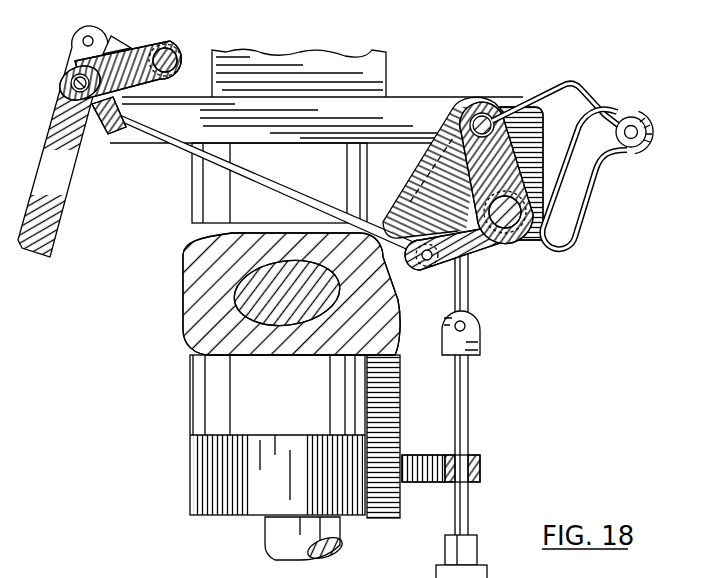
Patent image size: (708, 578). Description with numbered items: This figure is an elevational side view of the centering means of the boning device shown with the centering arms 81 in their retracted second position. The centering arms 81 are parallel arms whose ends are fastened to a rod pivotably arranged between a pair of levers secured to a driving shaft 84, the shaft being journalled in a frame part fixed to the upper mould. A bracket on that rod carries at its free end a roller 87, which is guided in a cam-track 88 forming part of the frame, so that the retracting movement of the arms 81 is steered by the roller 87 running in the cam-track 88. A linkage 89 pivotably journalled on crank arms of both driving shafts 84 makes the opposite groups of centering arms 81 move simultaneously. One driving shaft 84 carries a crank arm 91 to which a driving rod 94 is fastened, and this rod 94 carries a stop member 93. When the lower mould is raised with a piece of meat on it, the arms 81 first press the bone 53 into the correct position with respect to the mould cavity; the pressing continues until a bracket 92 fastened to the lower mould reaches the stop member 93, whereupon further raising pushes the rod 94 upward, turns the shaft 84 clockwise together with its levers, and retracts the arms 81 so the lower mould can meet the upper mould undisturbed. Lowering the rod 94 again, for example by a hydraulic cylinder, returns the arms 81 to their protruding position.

The bone 53 is at (233, 298).
The centering arms 81 is at (73, 157).
The driving shaft 84 is at (182, 52).
The roller 87 is at (658, 142).
The cam-track 88 is at (622, 153).
The linkage 89 is at (316, 207).
The crank arm 91 is at (447, 275).
The bracket 92 is at (481, 467).
The stop member 93 is at (470, 338).
The driving rod 94 is at (470, 293).